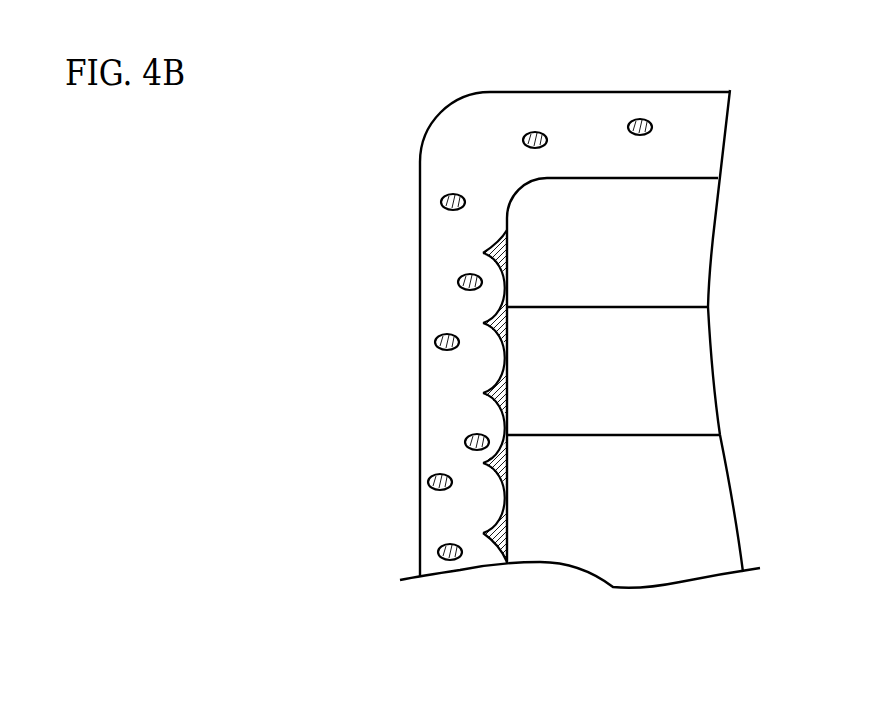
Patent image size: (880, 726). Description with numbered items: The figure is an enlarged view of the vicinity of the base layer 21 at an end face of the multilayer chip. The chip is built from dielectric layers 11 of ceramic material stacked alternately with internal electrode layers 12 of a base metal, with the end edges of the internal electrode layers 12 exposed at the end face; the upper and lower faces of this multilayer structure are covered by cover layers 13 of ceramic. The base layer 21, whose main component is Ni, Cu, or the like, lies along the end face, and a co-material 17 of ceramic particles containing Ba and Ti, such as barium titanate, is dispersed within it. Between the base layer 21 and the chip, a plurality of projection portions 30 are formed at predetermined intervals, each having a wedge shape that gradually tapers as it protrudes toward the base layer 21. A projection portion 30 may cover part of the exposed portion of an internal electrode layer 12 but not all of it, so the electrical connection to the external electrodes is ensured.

The dielectric layer 11 is at (668, 558).
The internal electrode layer 12 is at (607, 435).
The cover layer 13 is at (672, 203).
The co-material 17 is at (440, 202).
The base layer 21 is at (440, 512).
The projection portion 30 is at (477, 257).